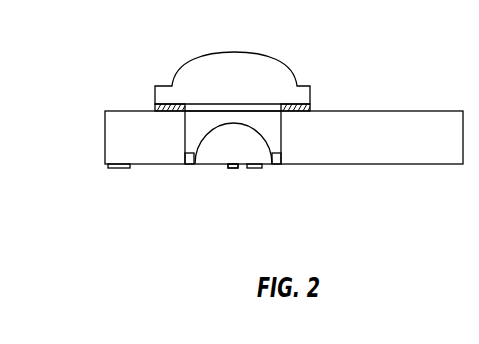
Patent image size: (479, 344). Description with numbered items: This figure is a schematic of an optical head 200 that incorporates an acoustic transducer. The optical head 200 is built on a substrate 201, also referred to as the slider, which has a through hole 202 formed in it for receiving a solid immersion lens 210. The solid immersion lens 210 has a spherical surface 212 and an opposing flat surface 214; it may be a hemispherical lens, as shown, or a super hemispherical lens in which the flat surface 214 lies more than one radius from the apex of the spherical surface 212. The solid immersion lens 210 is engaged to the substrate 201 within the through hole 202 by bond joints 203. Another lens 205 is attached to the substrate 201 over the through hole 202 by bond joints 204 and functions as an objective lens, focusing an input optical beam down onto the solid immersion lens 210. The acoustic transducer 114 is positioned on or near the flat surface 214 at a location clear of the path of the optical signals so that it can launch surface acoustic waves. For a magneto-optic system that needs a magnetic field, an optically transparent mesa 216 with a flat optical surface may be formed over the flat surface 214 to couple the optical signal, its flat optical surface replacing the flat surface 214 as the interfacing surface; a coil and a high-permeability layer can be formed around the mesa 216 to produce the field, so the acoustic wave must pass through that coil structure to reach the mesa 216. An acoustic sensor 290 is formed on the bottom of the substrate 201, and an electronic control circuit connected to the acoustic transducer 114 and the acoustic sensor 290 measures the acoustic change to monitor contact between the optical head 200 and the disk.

The optical head 200 is at (140, 42).
The substrate 201 is at (105, 143).
The through hole 202 is at (193, 116).
The bond joints 203 is at (187, 170).
The bond joints 204 is at (152, 106).
The objective lens 205 is at (265, 55).
The solid immersion lens 210 is at (253, 155).
The spherical surface 212 is at (272, 141).
The flat surface 214 is at (213, 167).
The optically transparent mesa 216 is at (233, 168).
The acoustic transducer 114 is at (258, 168).
The acoustic sensor 290 is at (120, 170).